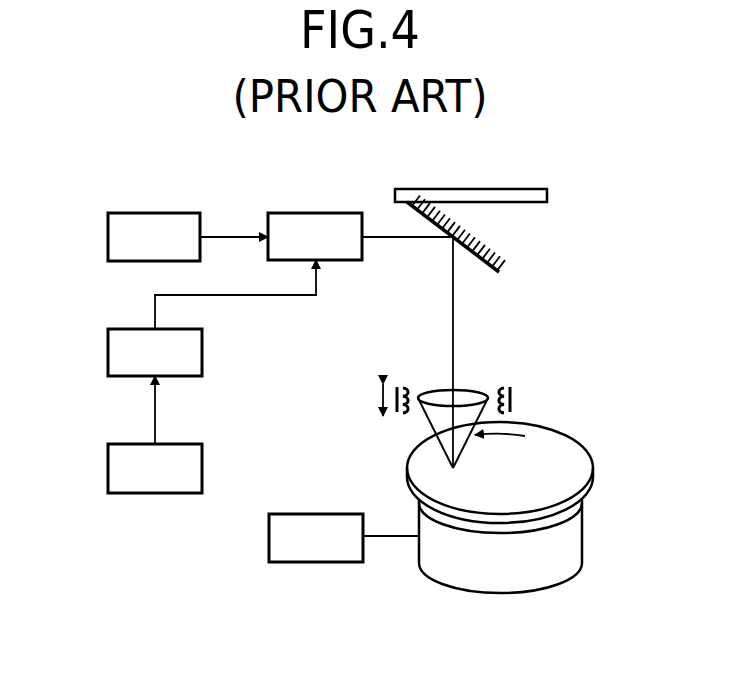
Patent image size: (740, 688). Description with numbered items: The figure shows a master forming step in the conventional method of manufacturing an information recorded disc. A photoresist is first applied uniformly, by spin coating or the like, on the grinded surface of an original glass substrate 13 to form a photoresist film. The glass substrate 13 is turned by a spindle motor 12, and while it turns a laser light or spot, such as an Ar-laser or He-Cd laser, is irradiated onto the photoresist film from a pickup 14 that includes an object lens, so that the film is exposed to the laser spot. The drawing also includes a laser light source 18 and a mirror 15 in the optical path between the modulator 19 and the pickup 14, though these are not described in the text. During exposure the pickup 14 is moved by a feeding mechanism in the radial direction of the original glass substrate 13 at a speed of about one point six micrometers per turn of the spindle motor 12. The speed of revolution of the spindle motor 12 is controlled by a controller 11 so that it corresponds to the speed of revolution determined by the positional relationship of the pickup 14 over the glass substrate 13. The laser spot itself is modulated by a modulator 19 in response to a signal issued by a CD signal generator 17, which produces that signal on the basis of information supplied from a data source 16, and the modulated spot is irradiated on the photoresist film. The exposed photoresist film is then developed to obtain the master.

The controller 11 is at (300, 551).
The spindle motor 12 is at (540, 573).
The original glass substrate 13 is at (560, 455).
The pickup 14 is at (467, 395).
The mirror 15 is at (528, 193).
The data source 16 is at (133, 477).
The CD signal generator 17 is at (133, 363).
The laser light source 18 is at (123, 237).
The modulator 19 is at (310, 230).